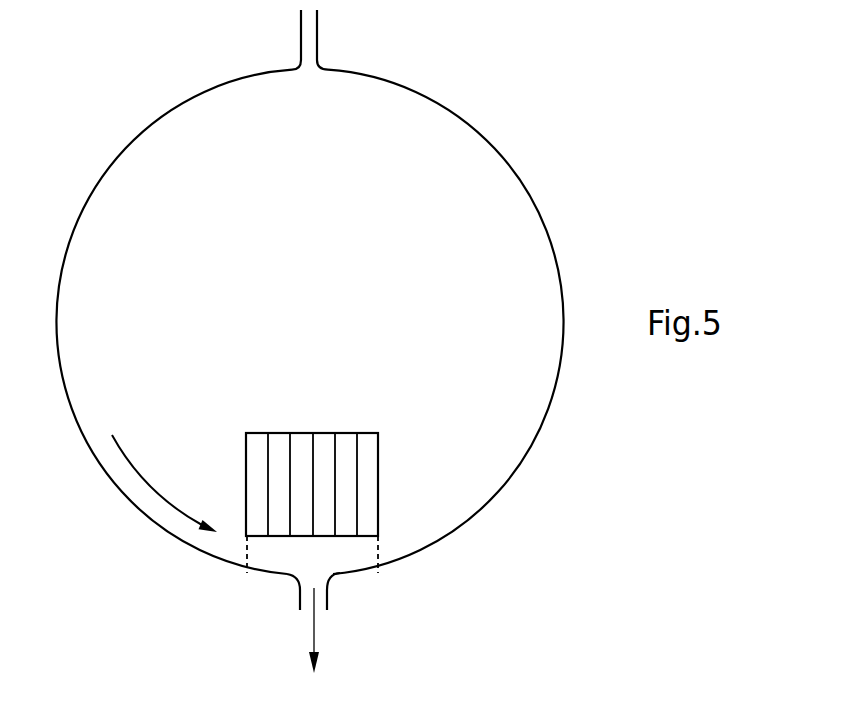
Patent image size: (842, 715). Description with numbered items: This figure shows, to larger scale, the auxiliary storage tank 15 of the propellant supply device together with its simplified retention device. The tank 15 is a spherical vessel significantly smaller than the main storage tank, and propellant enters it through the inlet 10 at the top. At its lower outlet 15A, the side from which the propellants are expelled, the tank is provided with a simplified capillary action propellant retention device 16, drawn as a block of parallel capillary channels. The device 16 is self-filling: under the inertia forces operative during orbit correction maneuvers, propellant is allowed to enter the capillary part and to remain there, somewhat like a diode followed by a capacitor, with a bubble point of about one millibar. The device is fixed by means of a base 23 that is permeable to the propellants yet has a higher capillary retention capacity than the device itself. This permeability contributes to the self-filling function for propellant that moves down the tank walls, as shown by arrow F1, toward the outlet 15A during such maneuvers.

The inlet tube 10 is at (301, 43).
The auxiliary storage tank 15 is at (482, 133).
The outlet 15A is at (332, 583).
The simplified capillary action propellant retention device 16 is at (378, 487).
The base 23 is at (248, 552).
The arrow F1 is at (164, 483).